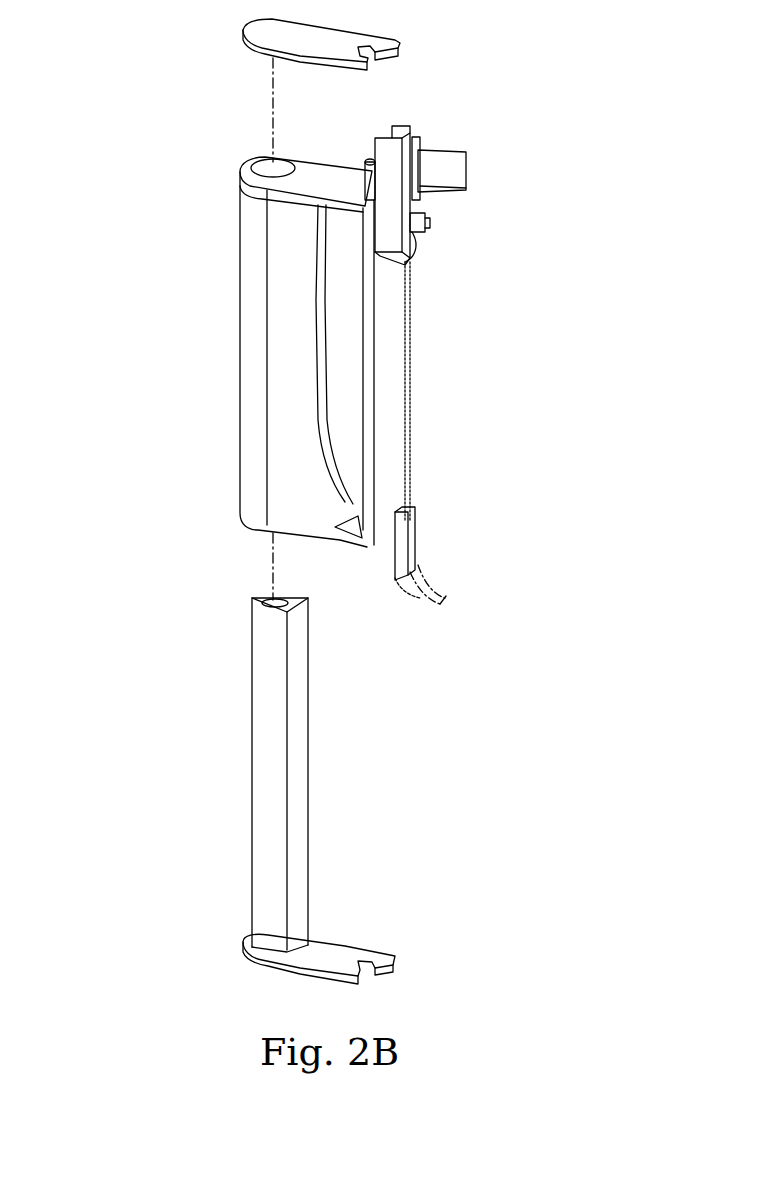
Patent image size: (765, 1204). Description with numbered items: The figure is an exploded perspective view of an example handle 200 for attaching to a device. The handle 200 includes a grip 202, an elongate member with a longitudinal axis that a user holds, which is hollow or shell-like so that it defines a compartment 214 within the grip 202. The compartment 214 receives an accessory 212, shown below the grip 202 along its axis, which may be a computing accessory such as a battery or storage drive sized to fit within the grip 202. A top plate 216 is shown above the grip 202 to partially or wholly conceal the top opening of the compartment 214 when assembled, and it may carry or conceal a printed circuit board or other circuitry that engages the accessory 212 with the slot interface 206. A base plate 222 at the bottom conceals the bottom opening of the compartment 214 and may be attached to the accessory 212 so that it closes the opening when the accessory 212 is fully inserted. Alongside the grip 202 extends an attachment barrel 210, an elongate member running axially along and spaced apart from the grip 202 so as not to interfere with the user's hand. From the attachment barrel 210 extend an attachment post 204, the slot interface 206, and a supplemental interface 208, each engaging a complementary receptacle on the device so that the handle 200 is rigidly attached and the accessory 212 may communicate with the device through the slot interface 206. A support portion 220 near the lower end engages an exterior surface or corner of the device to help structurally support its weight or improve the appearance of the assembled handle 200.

The handle 200 is at (124, 135).
The grip 202 is at (237, 415).
The attachment post 204 is at (417, 553).
The slot interface 206 is at (448, 170).
The supplemental interface 208 is at (415, 225).
The attachment barrel 210 is at (392, 352).
The accessory 212 is at (257, 775).
The compartment 214 is at (272, 172).
The top plate 216 is at (352, 37).
The support portion 220 is at (428, 590).
The base plate 222 is at (332, 955).